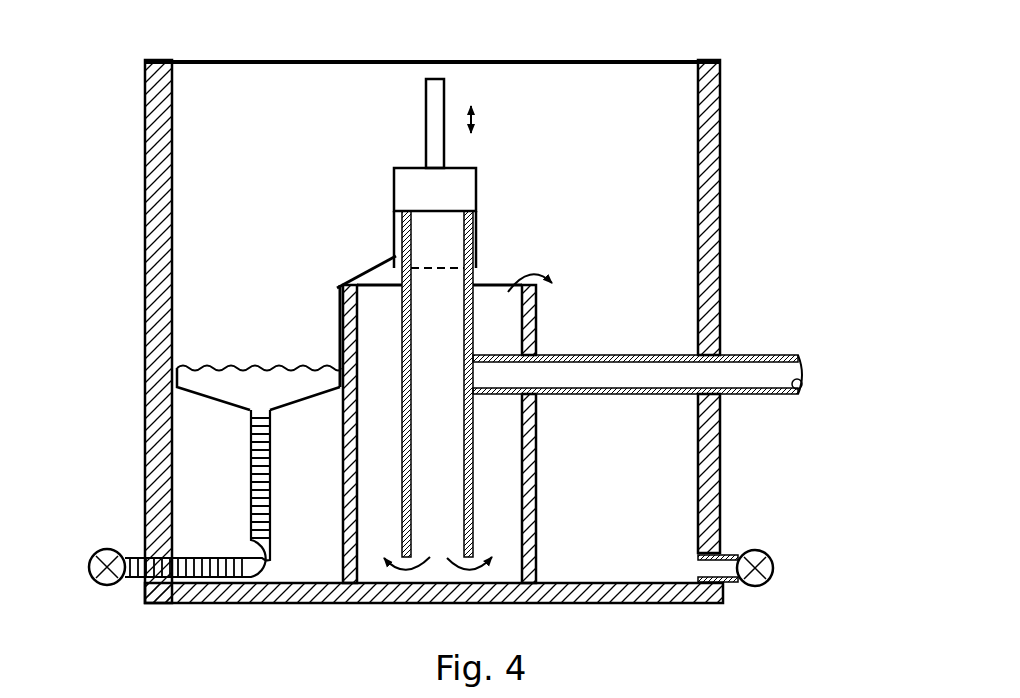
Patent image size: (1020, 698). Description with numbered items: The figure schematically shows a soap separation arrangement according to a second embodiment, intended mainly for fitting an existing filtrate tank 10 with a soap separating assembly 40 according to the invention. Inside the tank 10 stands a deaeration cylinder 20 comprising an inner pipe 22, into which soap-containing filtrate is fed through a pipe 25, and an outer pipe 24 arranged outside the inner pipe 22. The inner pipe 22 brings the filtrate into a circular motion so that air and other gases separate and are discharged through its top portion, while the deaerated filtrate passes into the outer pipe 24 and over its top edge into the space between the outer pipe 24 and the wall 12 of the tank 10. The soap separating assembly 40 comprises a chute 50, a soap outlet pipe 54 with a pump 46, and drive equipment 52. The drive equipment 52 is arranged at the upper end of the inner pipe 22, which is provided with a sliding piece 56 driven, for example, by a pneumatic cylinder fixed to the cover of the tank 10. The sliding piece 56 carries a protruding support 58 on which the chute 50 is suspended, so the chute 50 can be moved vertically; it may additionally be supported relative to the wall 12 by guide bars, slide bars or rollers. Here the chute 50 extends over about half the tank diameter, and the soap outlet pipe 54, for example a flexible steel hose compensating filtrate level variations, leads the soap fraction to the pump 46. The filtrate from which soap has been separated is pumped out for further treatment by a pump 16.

The filtrate tank 10 is at (740, 64).
The wall of the tank 12 is at (144, 208).
The pump 16 is at (758, 568).
The deaeration cylinder 20 is at (542, 484).
The inner pipe 22 is at (475, 517).
The outer pipe 24 is at (540, 556).
The pipe 25 is at (793, 353).
The soap separating assembly 40 is at (226, 200).
The pump 46 is at (118, 583).
The chute 50 is at (216, 377).
The drive equipment 52 is at (502, 76).
The soap outlet pipe 54 is at (256, 472).
The sliding piece 56 is at (478, 211).
The protruding support 58 is at (358, 272).